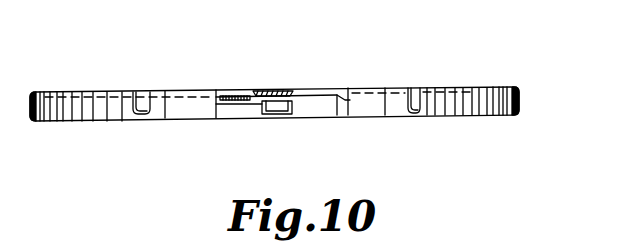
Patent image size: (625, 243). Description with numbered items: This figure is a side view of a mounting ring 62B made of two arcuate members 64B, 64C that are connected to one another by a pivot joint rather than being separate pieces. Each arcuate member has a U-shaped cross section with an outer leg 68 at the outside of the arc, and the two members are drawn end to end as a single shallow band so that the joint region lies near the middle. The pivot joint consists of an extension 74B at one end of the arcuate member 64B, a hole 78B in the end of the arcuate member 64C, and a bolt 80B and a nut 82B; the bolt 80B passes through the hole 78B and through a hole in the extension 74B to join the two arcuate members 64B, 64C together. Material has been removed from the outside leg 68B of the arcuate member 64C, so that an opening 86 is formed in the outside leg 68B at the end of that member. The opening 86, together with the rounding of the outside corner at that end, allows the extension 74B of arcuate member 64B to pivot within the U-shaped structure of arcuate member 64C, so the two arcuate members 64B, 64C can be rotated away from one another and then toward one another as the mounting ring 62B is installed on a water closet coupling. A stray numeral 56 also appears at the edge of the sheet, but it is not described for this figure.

The mounting ring 62B is at (527, 89).
The arcuate member 64B is at (63, 91).
The arcuate member 64C is at (485, 87).
The outside leg 68B is at (175, 105).
The outer leg 68 is at (422, 108).
The extension 74B is at (327, 98).
The hole 78B is at (257, 91).
The bolt 80B is at (275, 91).
The nut 82B is at (252, 110).
The opening 86 is at (220, 105).
The numeral 56 is at (537, 235).